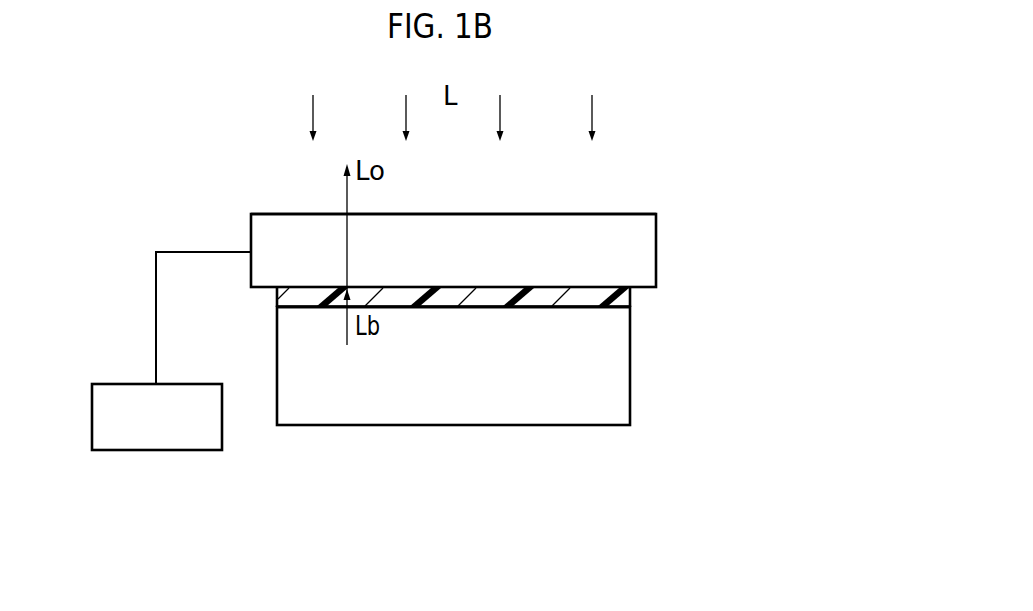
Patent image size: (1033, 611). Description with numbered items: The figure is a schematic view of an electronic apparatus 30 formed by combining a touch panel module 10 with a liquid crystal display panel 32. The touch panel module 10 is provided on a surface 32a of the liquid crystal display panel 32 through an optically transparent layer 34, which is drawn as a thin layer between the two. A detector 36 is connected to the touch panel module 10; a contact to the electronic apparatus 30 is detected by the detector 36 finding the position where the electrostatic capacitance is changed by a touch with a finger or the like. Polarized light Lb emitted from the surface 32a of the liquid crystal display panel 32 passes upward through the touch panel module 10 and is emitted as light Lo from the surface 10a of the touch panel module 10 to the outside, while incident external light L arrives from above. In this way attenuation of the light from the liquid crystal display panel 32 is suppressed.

The electronic apparatus 30 is at (662, 186).
The touch panel module 10 is at (656, 245).
The surface of touch panel module 10a is at (287, 214).
The optically transparent layer 34 is at (630, 293).
The liquid crystal display panel 32 is at (630, 368).
The surface of liquid crystal display panel 32a is at (616, 305).
The detector 36 is at (172, 450).